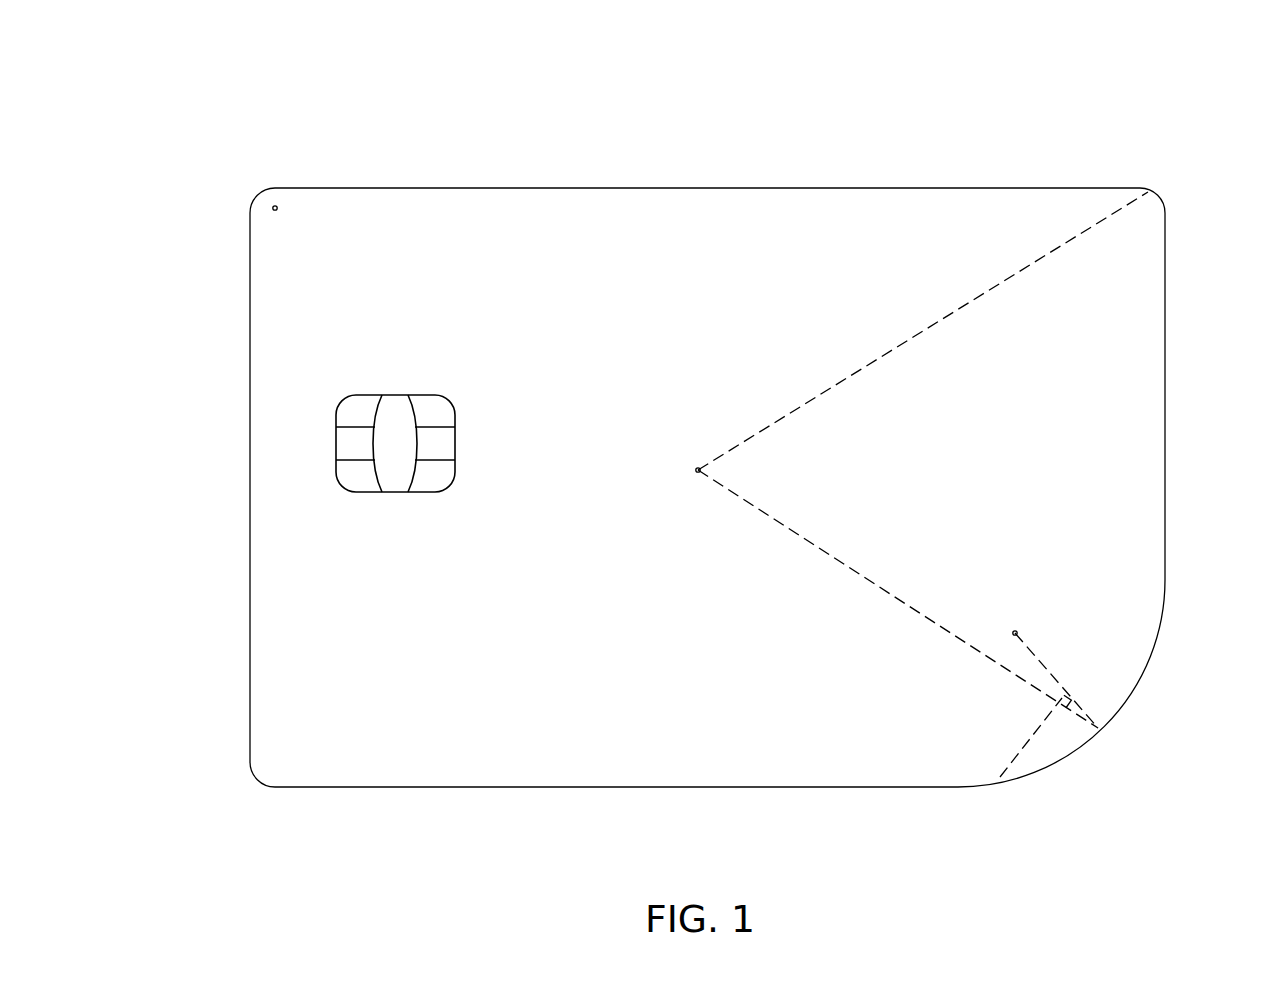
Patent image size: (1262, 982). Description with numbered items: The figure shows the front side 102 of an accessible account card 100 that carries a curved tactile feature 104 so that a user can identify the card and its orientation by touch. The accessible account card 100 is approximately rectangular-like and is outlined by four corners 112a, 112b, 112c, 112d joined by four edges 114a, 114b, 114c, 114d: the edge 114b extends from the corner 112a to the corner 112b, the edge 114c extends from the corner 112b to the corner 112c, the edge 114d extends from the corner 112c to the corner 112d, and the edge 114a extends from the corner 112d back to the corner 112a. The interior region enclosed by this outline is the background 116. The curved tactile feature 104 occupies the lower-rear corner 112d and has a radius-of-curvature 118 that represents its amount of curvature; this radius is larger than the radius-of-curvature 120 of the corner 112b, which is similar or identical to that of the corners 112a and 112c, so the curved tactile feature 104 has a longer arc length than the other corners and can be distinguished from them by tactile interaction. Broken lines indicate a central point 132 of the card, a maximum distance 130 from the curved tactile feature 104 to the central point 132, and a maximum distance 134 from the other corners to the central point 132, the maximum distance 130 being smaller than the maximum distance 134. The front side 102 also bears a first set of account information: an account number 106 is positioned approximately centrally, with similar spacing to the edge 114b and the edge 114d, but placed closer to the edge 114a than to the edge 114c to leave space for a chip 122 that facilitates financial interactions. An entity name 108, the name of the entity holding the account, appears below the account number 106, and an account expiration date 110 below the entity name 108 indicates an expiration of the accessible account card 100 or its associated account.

The accessible account card 100 is at (222, 115).
The front side 102 is at (912, 233).
The curved tactile feature 104 is at (1132, 692).
The account number 106 is at (1100, 558).
The entity name 108 is at (328, 628).
The account expiration date 110 is at (473, 738).
The corner 112a is at (250, 762).
The corner 112b is at (258, 197).
The corner 112c is at (1147, 188).
The corner 112d is at (1068, 760).
The edge 114a is at (712, 787).
The edge 114b is at (250, 476).
The edge 114c is at (612, 182).
The edge 114d is at (1167, 412).
The background 116 is at (655, 302).
The radius-of-curvature 118 is at (1000, 777).
The radius-of-curvature 120 is at (258, 205).
The chip 122 is at (395, 420).
The maximum distance 130 is at (918, 617).
The central point 132 is at (698, 470).
The maximum distance 134 is at (897, 352).